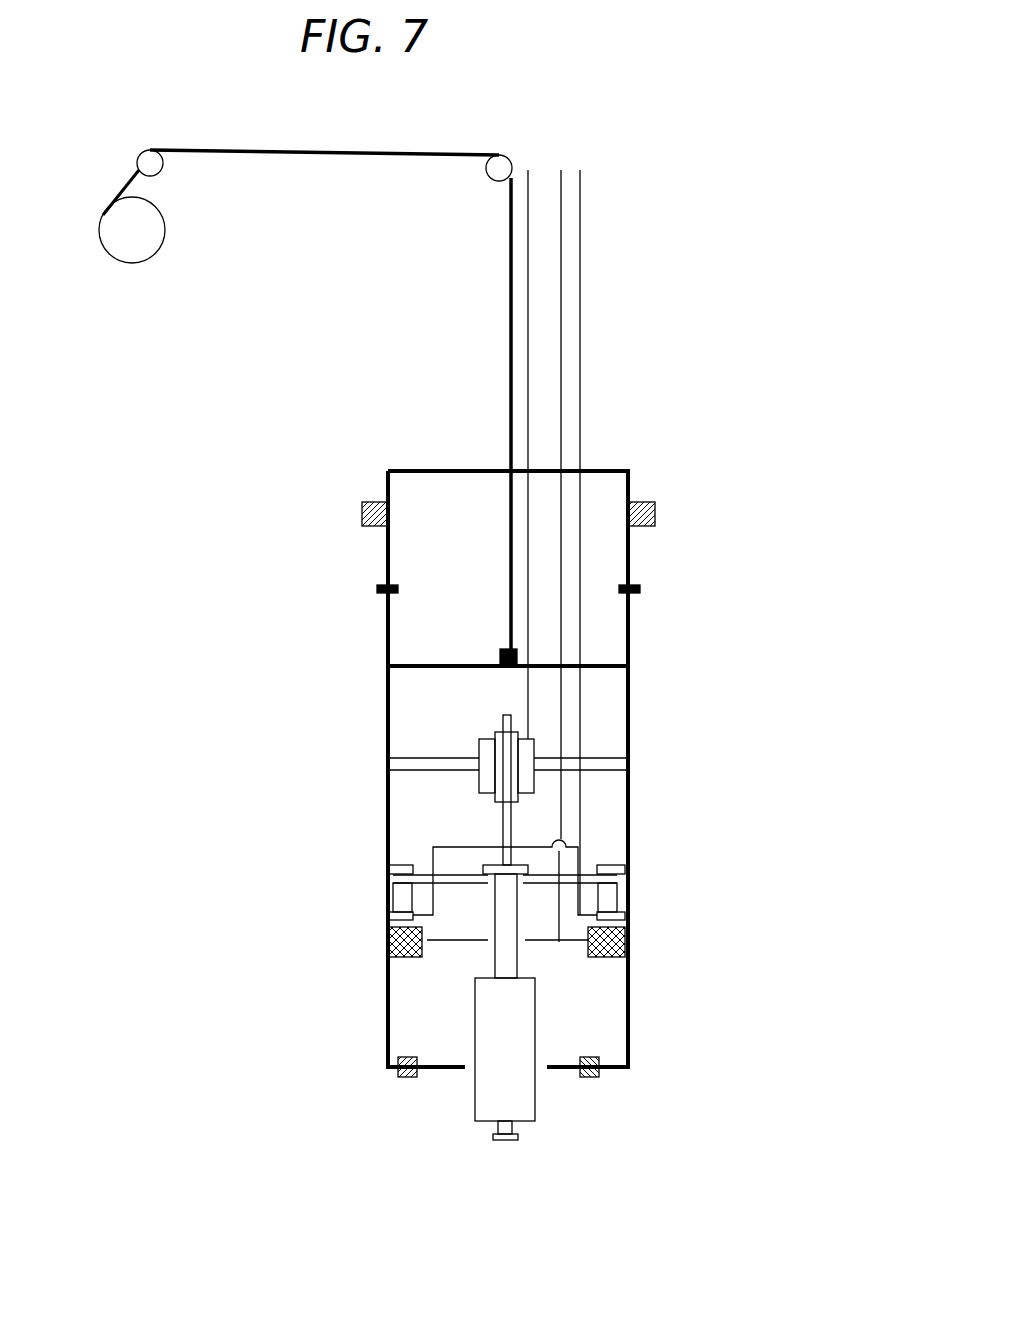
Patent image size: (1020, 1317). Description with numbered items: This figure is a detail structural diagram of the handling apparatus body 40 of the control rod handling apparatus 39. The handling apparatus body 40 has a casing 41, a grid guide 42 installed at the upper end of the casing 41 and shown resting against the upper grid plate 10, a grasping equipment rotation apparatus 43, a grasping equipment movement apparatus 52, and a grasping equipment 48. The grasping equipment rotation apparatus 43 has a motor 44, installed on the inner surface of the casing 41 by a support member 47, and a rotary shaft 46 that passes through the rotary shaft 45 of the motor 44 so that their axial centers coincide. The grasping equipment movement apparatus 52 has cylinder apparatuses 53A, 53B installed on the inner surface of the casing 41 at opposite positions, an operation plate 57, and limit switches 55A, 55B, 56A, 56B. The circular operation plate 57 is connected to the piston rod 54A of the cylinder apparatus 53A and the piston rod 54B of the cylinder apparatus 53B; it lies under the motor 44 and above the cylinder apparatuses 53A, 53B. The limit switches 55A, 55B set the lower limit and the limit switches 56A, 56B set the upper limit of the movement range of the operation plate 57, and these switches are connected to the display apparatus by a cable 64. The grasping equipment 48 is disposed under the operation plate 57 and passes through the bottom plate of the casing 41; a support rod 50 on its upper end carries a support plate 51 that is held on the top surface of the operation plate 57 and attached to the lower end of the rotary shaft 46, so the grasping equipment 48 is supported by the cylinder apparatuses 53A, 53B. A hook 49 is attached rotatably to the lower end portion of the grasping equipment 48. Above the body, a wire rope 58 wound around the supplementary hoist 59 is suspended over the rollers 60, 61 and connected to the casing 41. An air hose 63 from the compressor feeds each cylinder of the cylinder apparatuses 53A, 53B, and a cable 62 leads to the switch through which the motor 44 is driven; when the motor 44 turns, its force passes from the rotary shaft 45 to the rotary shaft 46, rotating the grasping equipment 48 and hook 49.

The upper grid plate 10 is at (361, 514).
The control rod handling apparatus 39 is at (674, 441).
The handling apparatus body 40 is at (629, 797).
The casing 41 is at (387, 688).
The grid guide 42 is at (658, 471).
The grasping equipment rotation apparatus 43 is at (490, 736).
The motor 44 is at (479, 748).
The rotary shaft 45 is at (496, 782).
The rotary shaft 46 is at (507, 715).
The support member 47 is at (606, 756).
The grasping equipment 48 is at (536, 1013).
The hook 49 is at (505, 1141).
The support rod 50 is at (494, 966).
The support plate 51 is at (490, 865).
The grasping equipment movement apparatus 52 is at (728, 828).
The cylinder apparatus 53A is at (622, 938).
The cylinder apparatus 53B is at (390, 938).
The piston rod 54A is at (606, 896).
The piston rod 54B is at (405, 896).
The limit switch 55A is at (612, 914).
The limit switch 55B is at (402, 914).
The limit switch 56A is at (612, 864).
The limit switch 56B is at (400, 864).
The operation plate 57 is at (470, 885).
The wire rope 58 is at (510, 282).
The supplementary hoist 59 is at (104, 232).
The roller 60 is at (148, 160).
The roller 61 is at (500, 165).
The cable 62 is at (527, 359).
The air hose 63 is at (562, 385).
The cable 64 is at (581, 250).